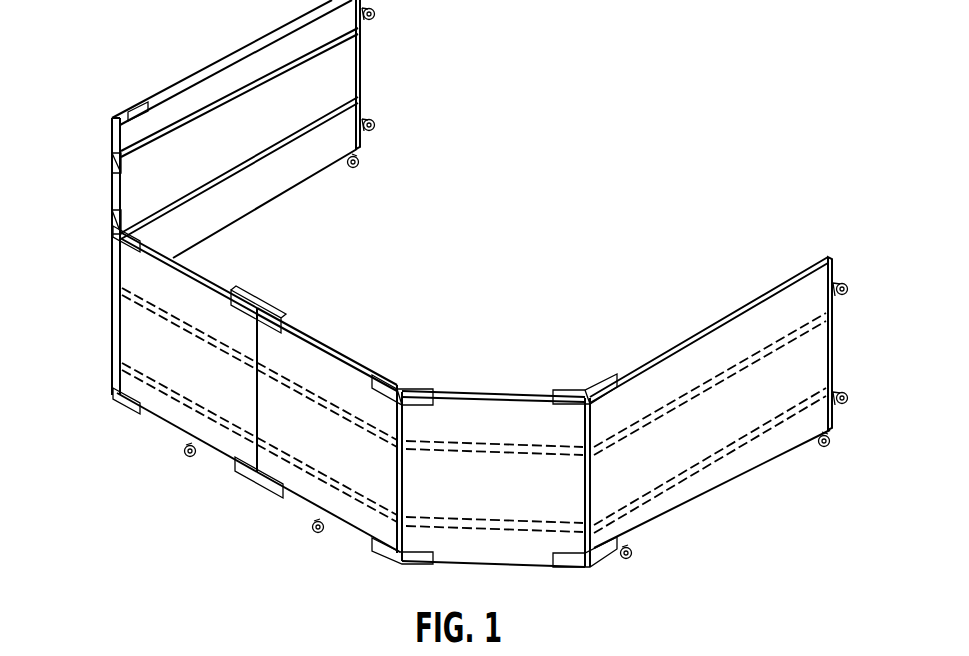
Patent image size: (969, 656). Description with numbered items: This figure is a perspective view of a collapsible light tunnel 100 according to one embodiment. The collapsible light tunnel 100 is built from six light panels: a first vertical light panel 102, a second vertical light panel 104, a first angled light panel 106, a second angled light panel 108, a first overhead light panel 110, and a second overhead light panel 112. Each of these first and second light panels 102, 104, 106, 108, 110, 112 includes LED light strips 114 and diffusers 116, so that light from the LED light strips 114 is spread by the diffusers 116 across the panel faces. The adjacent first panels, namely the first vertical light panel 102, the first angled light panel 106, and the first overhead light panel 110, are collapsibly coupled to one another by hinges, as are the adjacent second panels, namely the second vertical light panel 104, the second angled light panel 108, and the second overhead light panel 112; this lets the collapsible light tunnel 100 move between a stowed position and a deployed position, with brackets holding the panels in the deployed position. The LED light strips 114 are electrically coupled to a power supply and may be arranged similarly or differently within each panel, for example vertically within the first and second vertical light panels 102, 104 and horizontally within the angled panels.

The collapsible light tunnel 100 is at (636, 96).
The first vertical light panel 102 is at (233, 52).
The second vertical light panel 104 is at (730, 468).
The first angled light panel 106 is at (118, 174).
The second angled light panel 108 is at (490, 546).
The first overhead light panel 110 is at (170, 421).
The second overhead light panel 112 is at (292, 505).
The LED light strips 114 is at (283, 72).
The diffusers 116 is at (233, 197).